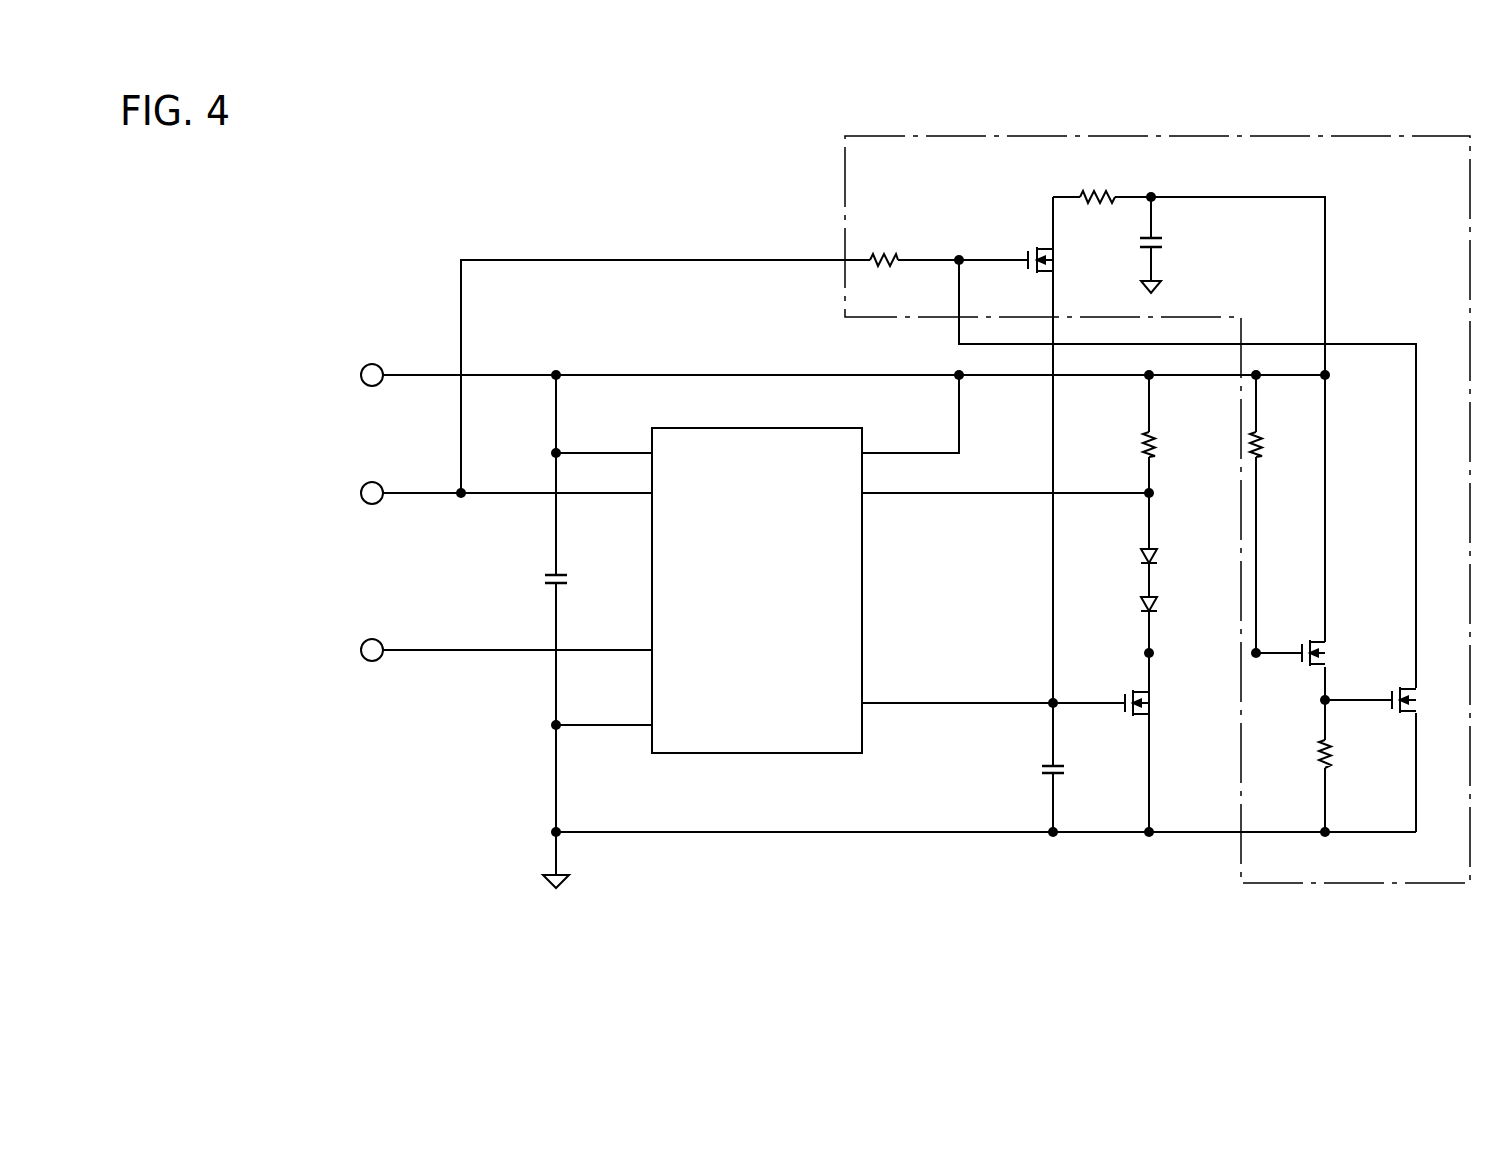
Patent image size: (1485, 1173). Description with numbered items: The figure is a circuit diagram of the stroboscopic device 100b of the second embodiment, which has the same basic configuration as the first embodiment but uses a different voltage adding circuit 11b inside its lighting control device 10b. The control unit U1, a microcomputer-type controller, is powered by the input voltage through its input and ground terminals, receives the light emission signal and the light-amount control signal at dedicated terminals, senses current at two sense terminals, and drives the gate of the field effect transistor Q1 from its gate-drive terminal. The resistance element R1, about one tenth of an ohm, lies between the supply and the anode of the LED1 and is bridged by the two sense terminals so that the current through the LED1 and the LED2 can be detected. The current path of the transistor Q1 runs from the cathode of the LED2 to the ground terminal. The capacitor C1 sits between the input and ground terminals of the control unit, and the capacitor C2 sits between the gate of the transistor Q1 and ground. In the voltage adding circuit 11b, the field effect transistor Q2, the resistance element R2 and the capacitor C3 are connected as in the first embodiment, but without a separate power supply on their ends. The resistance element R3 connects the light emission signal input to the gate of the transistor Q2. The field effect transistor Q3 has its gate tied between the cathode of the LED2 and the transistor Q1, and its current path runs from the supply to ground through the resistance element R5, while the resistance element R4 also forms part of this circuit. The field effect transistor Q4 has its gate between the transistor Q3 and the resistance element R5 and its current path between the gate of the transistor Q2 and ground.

The lighting control device 10b is at (652, 215).
The voltage adding circuit 11b is at (845, 177).
The stroboscopic device 100b is at (975, 957).
The control unit U1 is at (757, 571).
The capacitor C1 is at (538, 579).
The capacitor C2 is at (1072, 773).
The capacitor C3 is at (1171, 262).
The resistance element R1 is at (1164, 445).
The resistance element R2 is at (1095, 177).
The resistance element R3 is at (884, 240).
The resistance element R4 is at (1273, 445).
The resistance element R5 is at (1343, 767).
The field effect transistor Q1 is at (1155, 704).
The field effect transistor Q2 is at (1059, 261).
The field effect transistor Q3 is at (1333, 655).
The field effect transistor Q4 is at (1421, 703).
The LED LED1 is at (1182, 556).
The LED LED2 is at (1182, 606).